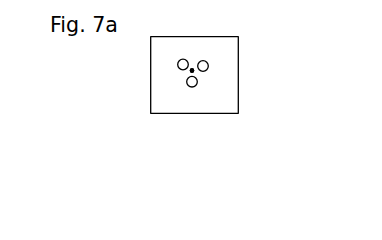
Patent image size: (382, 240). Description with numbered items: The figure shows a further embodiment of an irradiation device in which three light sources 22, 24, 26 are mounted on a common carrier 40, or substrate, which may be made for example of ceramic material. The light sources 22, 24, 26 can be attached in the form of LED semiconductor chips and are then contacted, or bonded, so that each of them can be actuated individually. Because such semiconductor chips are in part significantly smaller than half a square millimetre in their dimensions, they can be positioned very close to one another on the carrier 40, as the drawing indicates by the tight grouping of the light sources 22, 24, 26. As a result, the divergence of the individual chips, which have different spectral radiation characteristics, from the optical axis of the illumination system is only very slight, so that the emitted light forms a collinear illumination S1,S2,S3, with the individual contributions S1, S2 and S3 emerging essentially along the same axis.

The light source 22 is at (178, 72).
The light source 24 is at (208, 66).
The light source 26 is at (198, 84).
The carrier 40 is at (174, 100).
The collinear illumination S1,S2,S3 is at (240, 37).
The collinear illumination S1 is at (191, 70).
The collinear illumination S2 is at (191, 70).
The collinear illumination S3 is at (192, 69).